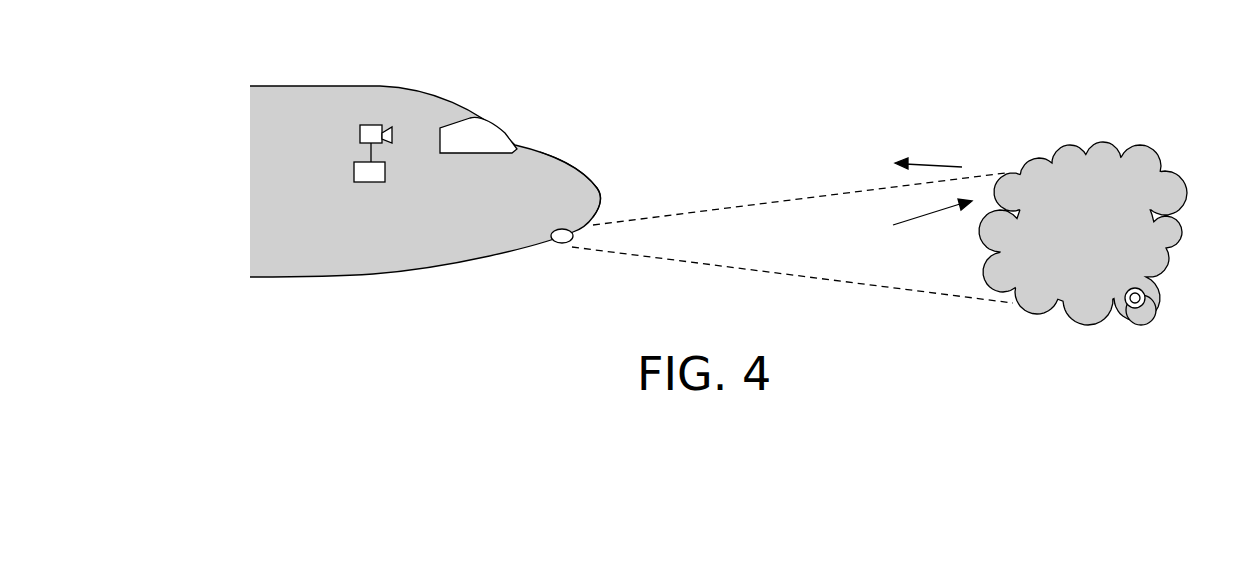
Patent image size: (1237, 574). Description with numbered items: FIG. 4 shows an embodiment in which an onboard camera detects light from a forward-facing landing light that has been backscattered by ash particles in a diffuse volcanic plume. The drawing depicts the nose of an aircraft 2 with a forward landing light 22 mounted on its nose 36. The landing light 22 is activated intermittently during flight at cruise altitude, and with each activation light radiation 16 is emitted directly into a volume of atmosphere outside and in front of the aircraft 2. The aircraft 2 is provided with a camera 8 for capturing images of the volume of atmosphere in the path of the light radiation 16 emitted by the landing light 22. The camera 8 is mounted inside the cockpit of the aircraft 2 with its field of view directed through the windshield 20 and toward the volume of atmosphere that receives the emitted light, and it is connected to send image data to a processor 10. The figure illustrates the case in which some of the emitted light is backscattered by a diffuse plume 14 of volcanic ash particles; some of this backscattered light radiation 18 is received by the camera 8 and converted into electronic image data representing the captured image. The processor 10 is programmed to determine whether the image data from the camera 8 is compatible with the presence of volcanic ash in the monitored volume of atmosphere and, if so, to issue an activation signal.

The aircraft 2 is at (405, 89).
The camera 8 is at (368, 125).
The processor 10 is at (354, 175).
The diffuse plume 14 is at (1112, 142).
The light radiation 16 is at (928, 215).
The backscattered light radiation 18 is at (927, 162).
The windshield 20 is at (503, 128).
The forward landing light 22 is at (563, 243).
The nose 36 is at (590, 176).